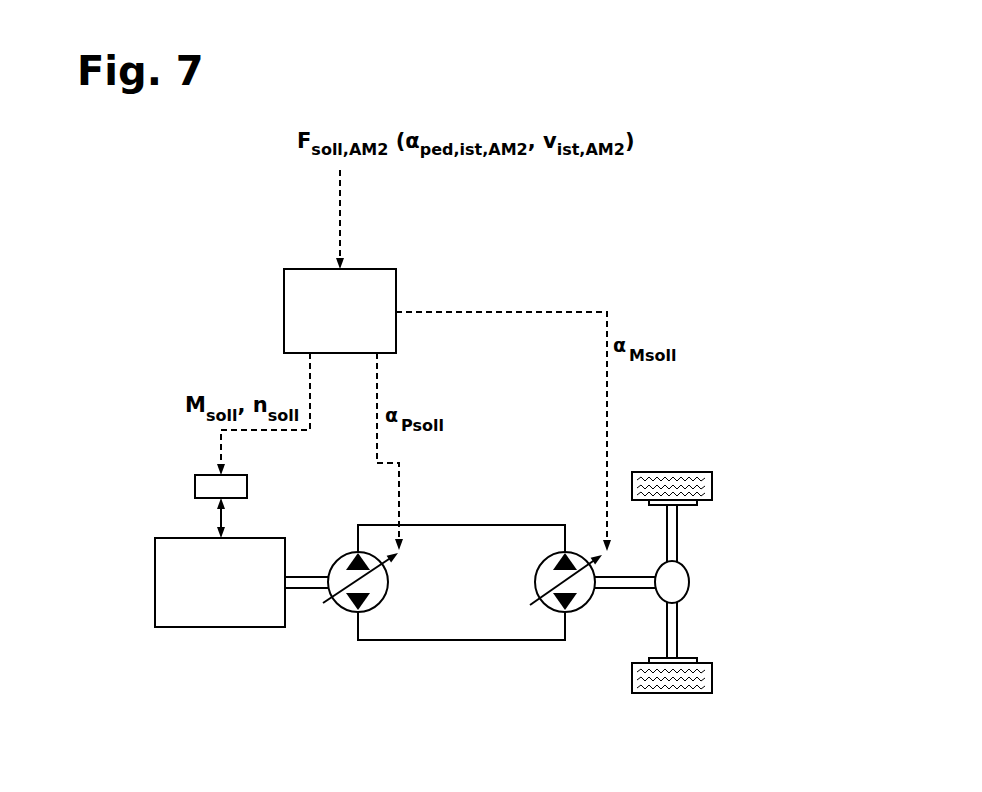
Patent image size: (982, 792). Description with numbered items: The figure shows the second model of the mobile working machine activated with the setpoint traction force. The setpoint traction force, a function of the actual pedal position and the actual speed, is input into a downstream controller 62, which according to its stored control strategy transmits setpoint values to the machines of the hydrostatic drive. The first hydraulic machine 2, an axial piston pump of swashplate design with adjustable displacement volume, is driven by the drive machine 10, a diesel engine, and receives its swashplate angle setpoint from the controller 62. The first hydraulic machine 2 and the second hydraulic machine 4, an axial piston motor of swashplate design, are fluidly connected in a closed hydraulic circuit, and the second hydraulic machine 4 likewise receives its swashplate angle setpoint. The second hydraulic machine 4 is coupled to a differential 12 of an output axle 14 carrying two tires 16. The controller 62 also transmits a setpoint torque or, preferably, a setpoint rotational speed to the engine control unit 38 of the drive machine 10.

The first hydraulic machine 2 is at (335, 610).
The second hydraulic machine 4 is at (587, 610).
The drive machine 10 is at (222, 628).
The differential 12 is at (690, 582).
The output axle 14 is at (628, 640).
The tires 16 is at (712, 482).
The engine control unit 38 is at (247, 486).
The controller 62 is at (355, 323).